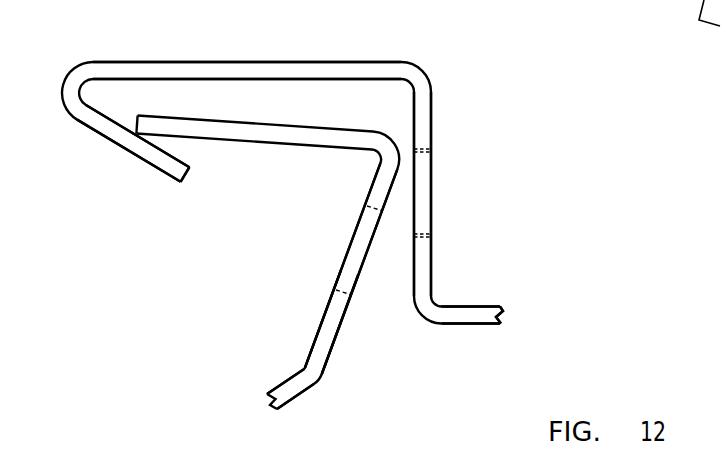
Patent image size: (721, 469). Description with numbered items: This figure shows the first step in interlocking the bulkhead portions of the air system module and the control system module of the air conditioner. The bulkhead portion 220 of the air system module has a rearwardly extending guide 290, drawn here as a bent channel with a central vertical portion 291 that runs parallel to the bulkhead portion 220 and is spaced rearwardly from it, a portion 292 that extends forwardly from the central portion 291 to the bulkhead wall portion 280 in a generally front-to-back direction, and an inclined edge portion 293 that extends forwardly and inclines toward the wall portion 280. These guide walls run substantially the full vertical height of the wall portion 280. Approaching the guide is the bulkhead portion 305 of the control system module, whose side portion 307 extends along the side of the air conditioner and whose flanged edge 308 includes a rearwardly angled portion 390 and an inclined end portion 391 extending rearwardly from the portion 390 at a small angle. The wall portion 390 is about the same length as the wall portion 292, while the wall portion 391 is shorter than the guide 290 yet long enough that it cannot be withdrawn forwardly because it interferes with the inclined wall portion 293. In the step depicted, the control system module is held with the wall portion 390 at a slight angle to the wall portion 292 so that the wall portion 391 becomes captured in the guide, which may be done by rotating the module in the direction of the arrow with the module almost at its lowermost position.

The bulkhead wall portion 280 is at (468, 307).
The bulkhead portion 220 is at (470, 324).
The guide 290 is at (305, 47).
The central vertical portion 291 is at (331, 70).
The portion extending forwardly 292 is at (425, 122).
The inclined edge portion 293 is at (136, 147).
The inclined end portion 391 is at (268, 142).
The rearwardly angled portion 390 is at (331, 341).
The flanged edge 308 is at (327, 311).
The side portion 307 is at (286, 386).
The bulkhead portion 305 is at (300, 396).